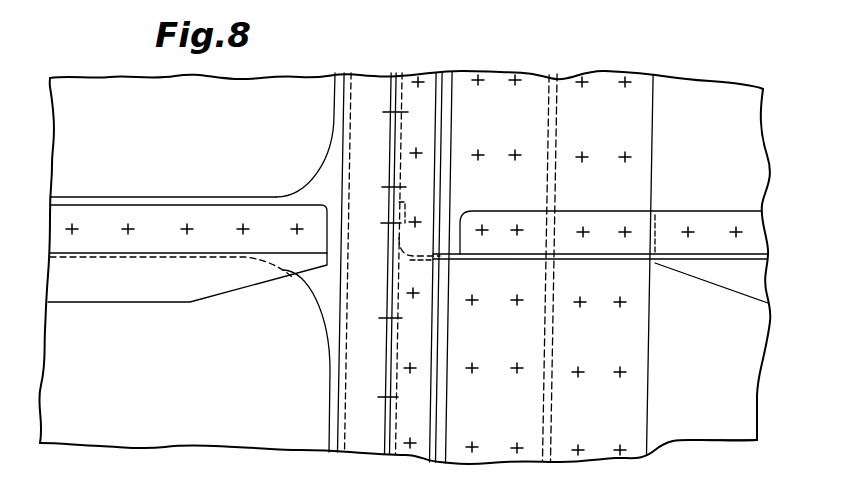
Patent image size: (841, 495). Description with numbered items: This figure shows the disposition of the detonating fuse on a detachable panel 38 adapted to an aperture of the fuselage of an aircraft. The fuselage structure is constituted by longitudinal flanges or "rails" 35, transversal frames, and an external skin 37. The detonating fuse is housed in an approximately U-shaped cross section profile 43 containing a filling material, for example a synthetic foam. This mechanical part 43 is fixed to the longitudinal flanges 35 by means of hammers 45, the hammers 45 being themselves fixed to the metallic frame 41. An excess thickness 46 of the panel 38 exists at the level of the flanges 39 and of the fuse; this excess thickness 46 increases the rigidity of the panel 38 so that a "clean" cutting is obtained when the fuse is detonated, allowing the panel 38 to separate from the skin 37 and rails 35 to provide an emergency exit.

The longitudinal flange 35 is at (757, 282).
The external skin 37 is at (728, 432).
The panel 38 is at (210, 432).
The flange 39 is at (110, 283).
The metallic frame 41 is at (642, 352).
The U-shaped cross section profile 43 is at (380, 93).
The hammer 45 is at (572, 256).
The excess thickness 46 is at (313, 193).